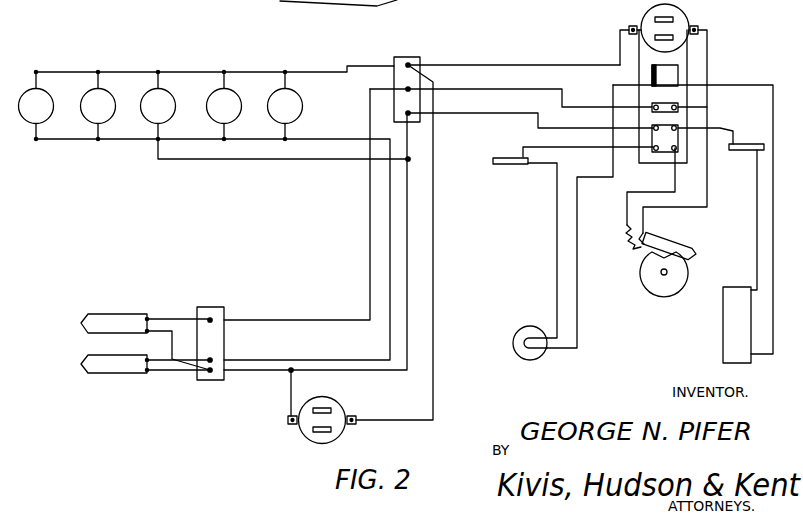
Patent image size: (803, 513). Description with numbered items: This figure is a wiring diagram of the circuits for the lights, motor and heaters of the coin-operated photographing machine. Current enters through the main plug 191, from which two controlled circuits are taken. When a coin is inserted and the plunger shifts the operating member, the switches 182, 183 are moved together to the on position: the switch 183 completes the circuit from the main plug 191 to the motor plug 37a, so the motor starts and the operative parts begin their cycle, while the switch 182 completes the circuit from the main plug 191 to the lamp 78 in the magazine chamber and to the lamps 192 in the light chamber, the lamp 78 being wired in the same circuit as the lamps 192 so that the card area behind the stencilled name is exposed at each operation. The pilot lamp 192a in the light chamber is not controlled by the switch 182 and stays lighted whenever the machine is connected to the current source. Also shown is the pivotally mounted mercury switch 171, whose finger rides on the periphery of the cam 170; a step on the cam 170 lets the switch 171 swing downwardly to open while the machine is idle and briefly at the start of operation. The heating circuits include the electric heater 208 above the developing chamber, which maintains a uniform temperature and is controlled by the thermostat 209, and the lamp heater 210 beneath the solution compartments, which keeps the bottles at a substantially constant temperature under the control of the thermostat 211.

The lamps 192 is at (42, 96).
The pilot lamp 192a is at (152, 117).
The lamp 78 is at (290, 100).
The motor plug 37a is at (641, 24).
The thermostat 209 is at (748, 143).
The thermostat 211 is at (520, 164).
The mercury switch 171 is at (678, 244).
The cam 170 is at (678, 274).
The electric heater 208 is at (734, 329).
The lamp heater 210 is at (528, 356).
The switch 183 is at (118, 321).
The switch 182 is at (137, 368).
The main plug 191 is at (312, 438).